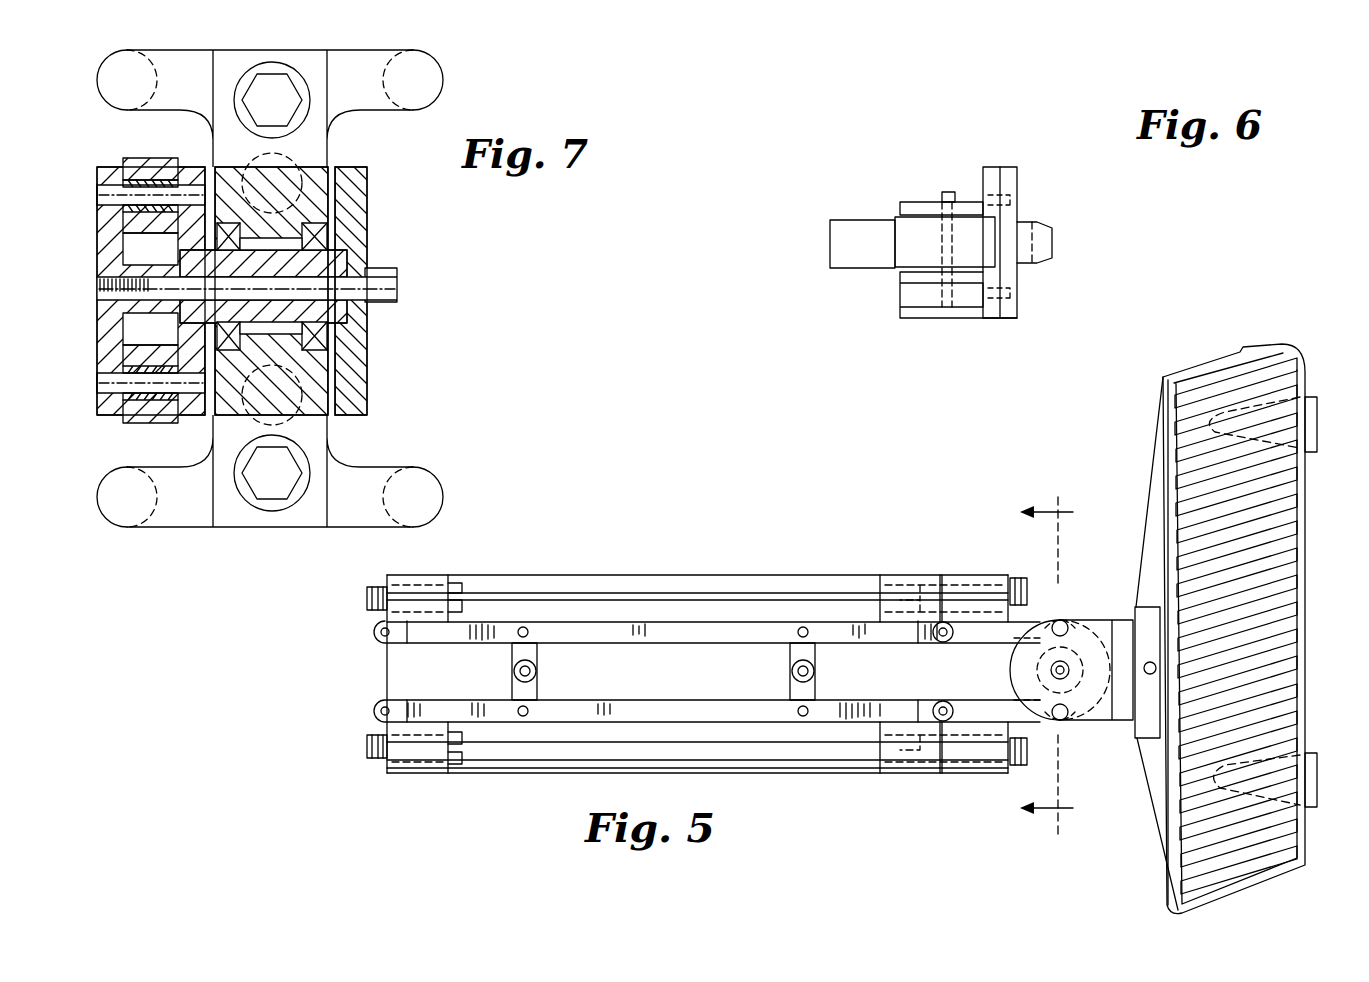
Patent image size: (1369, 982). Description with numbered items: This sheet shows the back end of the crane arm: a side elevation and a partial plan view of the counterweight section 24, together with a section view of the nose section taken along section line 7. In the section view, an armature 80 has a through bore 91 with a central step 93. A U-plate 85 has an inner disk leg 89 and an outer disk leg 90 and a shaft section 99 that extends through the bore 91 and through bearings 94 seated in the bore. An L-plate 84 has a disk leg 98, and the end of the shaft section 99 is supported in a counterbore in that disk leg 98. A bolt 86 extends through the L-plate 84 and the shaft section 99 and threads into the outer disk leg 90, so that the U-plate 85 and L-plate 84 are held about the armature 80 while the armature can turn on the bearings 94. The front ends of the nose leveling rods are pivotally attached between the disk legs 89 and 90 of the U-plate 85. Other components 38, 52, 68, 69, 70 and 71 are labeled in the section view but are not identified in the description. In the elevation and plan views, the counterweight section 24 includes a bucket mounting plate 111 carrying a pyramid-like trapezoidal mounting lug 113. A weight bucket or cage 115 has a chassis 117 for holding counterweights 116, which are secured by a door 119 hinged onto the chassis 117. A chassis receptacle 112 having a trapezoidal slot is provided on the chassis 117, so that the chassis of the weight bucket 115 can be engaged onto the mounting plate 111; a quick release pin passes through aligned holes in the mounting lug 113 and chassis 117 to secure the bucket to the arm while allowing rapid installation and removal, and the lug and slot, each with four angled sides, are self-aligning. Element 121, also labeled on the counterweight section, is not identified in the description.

In FIG. 5, the section line 7 is at (1053, 666).
In FIG. 5, the counterweight section 24 is at (1092, 736).
In FIG. 7, the roller 38 is at (100, 74).
In FIG. 7, the hex head bolt 52 is at (290, 100).
In FIG. 7, the lower bolt 68 is at (106, 385).
In FIG. 7, the upper bolt 69 is at (105, 192).
In FIG. 7, the nut 70 is at (140, 160).
In FIG. 7, the spacer 71 is at (125, 350).
In FIG. 7, the armature 80 is at (313, 408).
In FIG. 6, the armature 80 is at (860, 240).
In FIG. 7, the L-plate 84 is at (360, 204).
In FIG. 7, the U-plate 85 is at (92, 330).
In FIG. 7, the bolt 86 is at (395, 285).
In FIG. 6, the bolt 86 is at (948, 192).
In FIG. 7, the inner disk leg 89 is at (206, 172).
In FIG. 7, the outer disk leg 90 is at (105, 228).
In FIG. 6, the outer disk leg 90 is at (921, 313).
In FIG. 7, the through bore 91 is at (282, 234).
In FIG. 7, the central step 93 is at (330, 373).
In FIG. 7, the bearings 94 is at (320, 330).
In FIG. 7, the disk leg 98 is at (340, 400).
In FIG. 7, the shaft section 99 is at (345, 262).
In FIG. 6, the bucket mounting plate 111 is at (1008, 172).
In FIG. 5, the chassis receptacle 112 is at (1143, 648).
In FIG. 6, the mounting lug 113 is at (1053, 238).
In FIG. 5, the weight bucket 115 is at (1231, 900).
In FIG. 5, the counterweights 116 is at (1278, 518).
In FIG. 5, the chassis 117 is at (1155, 505).
In FIG. 5, the door 119 is at (1300, 462).
In FIG. 5, the lower bracket 121 is at (1137, 742).